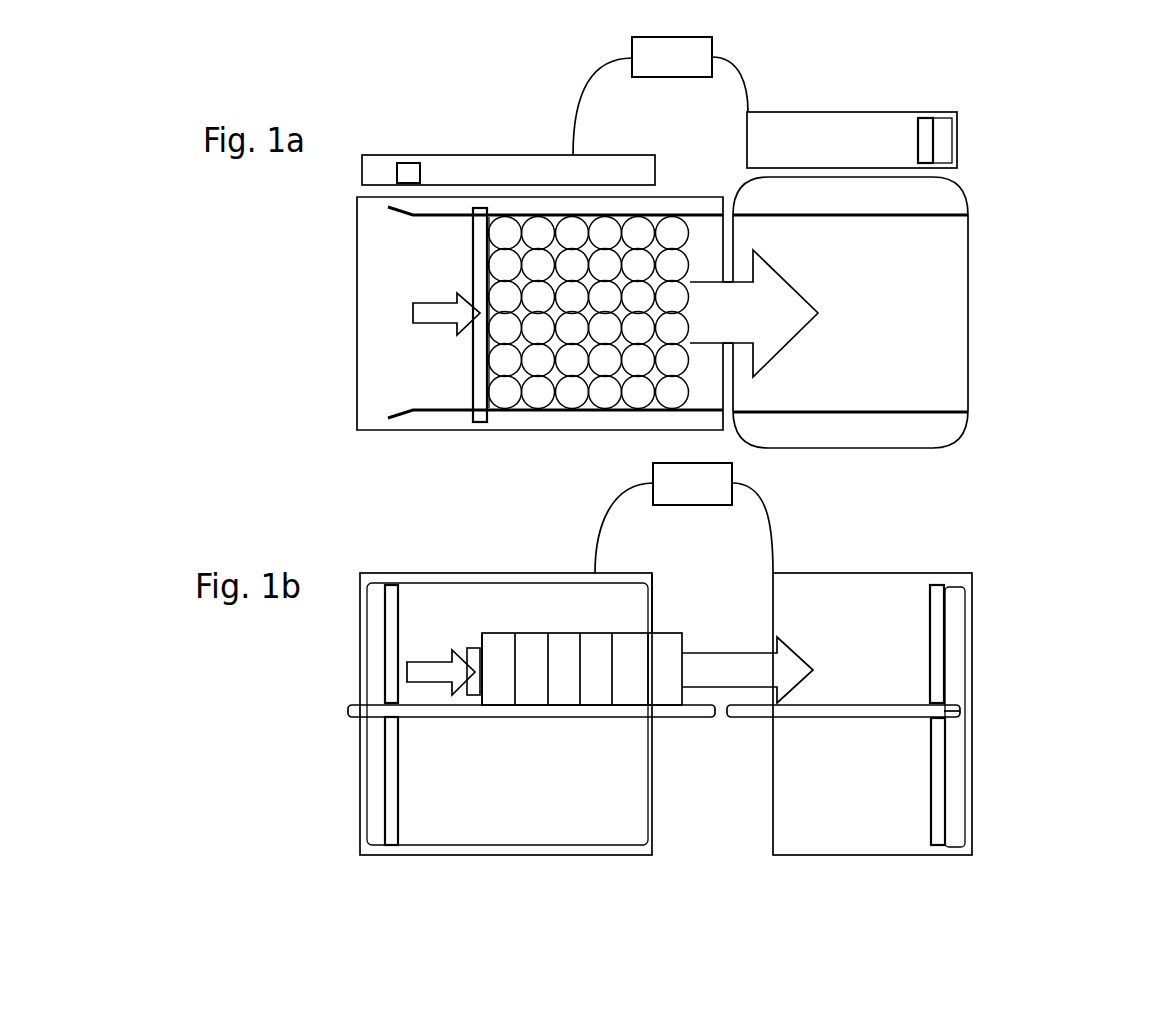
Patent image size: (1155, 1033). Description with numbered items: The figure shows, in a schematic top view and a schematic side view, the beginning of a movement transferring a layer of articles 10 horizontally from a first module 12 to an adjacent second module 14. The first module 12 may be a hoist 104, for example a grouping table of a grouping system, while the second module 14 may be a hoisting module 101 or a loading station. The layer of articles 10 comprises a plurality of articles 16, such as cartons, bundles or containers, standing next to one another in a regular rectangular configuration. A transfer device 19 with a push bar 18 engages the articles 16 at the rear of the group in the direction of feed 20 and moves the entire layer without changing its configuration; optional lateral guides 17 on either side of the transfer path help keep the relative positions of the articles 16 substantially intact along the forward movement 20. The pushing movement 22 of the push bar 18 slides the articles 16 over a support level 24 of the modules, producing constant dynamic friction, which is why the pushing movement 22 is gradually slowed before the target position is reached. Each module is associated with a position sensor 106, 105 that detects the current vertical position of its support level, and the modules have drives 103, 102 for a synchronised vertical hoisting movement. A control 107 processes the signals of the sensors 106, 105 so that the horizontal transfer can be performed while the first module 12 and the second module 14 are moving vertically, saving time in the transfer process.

In FIG. 1A, the layer or group of articles 10 is at (636, 204).
In FIG. 1B, the layer or group of articles 10 is at (672, 619).
In FIG. 1A, the first module 12 is at (373, 345).
In FIG. 1B, the first module 12 is at (430, 707).
In FIG. 1A, the second module 14 is at (913, 301).
In FIG. 1B, the second module 14 is at (862, 712).
In FIG. 1A, the articles 16 is at (575, 400).
In FIG. 1B, the articles 16 is at (530, 645).
In FIG. 1A, the lateral guide 17 is at (560, 215).
In FIG. 1A, the push bar 18 is at (497, 216).
In FIG. 1B, the push bar 18 is at (465, 650).
In FIG. 1A, the transfer device 19 is at (478, 203).
In FIG. 1B, the transfer device 19 is at (476, 627).
In FIG. 1A, the feed or forward movement 20 is at (758, 327).
In FIG. 1B, the feed or forward movement 20 is at (785, 684).
In FIG. 1A, the pushing movement 22 is at (421, 306).
In FIG. 1B, the pushing movement 22 is at (432, 670).
In FIG. 1B, the support level 24 is at (949, 703).
In FIG. 1A, the hoisting module 101 is at (925, 112).
In FIG. 1B, the hoisting module 101 is at (940, 585).
In FIG. 1A, the drive of second module 102 is at (945, 125).
In FIG. 1B, the drive of second module 102 is at (955, 820).
In FIG. 1A, the drive of first module 103 is at (405, 163).
In FIG. 1B, the drive of first module 103 is at (370, 612).
In FIG. 1A, the hoist 104 is at (371, 160).
In FIG. 1B, the hoist 104 is at (360, 573).
In FIG. 1A, the position sensor of second module 105 is at (918, 140).
In FIG. 1B, the position sensor of second module 105 is at (944, 645).
In FIG. 1A, the position sensor of first module 106 is at (398, 185).
In FIG. 1B, the position sensor of first module 106 is at (385, 645).
In FIG. 1A, the control 107 is at (697, 42).
In FIG. 1B, the control 107 is at (727, 465).